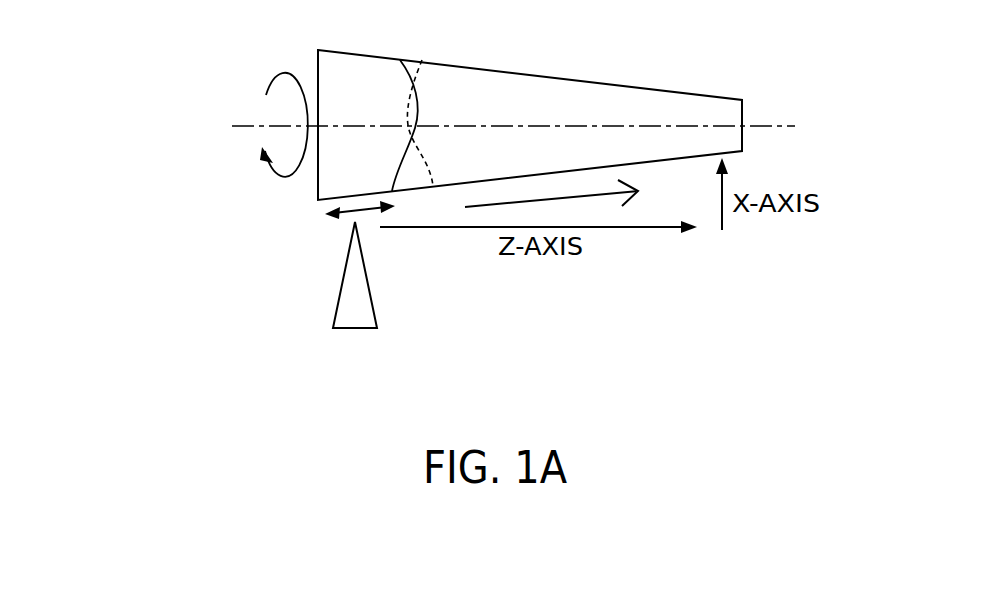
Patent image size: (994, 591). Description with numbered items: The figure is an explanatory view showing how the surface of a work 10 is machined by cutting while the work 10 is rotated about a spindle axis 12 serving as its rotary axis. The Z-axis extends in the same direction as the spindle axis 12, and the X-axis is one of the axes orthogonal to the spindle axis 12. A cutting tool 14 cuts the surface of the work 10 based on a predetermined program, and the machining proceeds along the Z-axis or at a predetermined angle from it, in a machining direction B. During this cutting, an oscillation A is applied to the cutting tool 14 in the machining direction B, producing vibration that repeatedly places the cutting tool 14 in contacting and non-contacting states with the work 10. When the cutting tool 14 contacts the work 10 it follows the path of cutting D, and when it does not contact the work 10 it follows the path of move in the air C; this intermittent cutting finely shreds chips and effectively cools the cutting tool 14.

The work 10 is at (636, 89).
The spindle axis 12 is at (410, 125).
The cutting tool 14 is at (353, 330).
The oscillation A is at (345, 218).
The machining direction B is at (583, 200).
The path of move in the air C is at (398, 101).
The path of cutting D is at (433, 98).